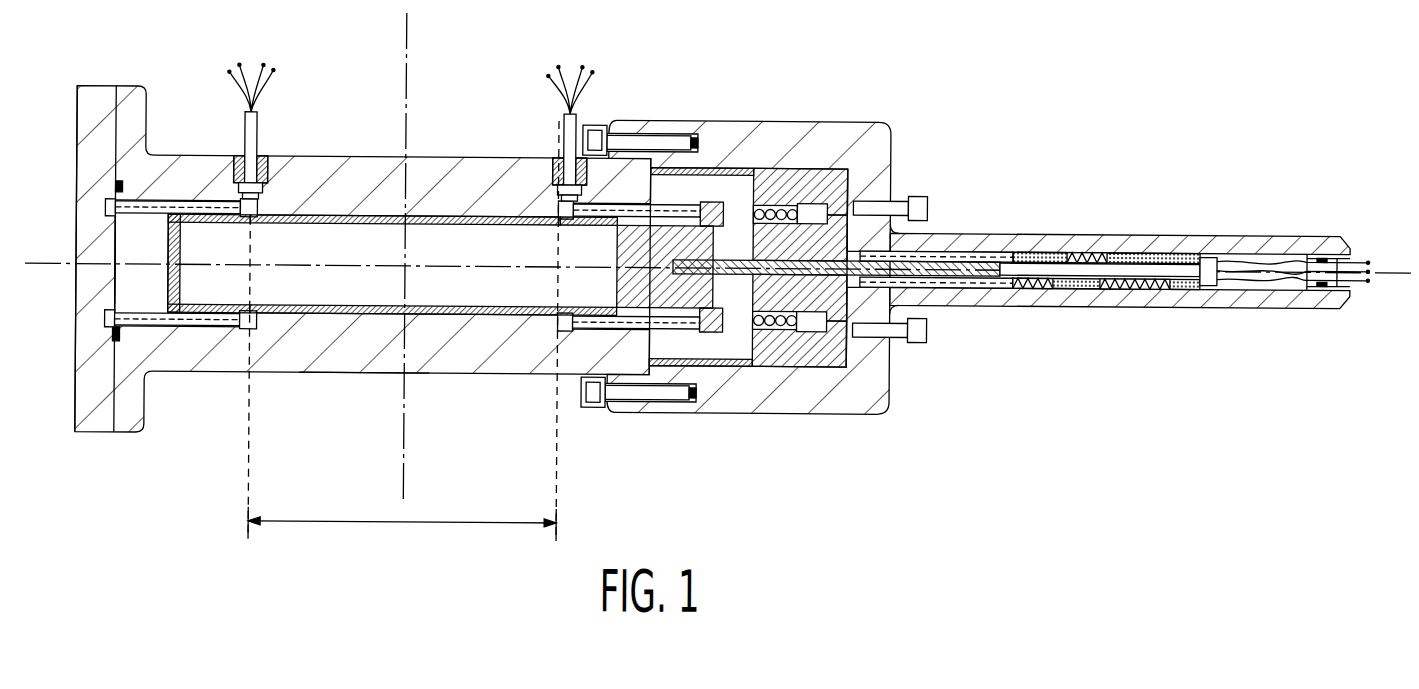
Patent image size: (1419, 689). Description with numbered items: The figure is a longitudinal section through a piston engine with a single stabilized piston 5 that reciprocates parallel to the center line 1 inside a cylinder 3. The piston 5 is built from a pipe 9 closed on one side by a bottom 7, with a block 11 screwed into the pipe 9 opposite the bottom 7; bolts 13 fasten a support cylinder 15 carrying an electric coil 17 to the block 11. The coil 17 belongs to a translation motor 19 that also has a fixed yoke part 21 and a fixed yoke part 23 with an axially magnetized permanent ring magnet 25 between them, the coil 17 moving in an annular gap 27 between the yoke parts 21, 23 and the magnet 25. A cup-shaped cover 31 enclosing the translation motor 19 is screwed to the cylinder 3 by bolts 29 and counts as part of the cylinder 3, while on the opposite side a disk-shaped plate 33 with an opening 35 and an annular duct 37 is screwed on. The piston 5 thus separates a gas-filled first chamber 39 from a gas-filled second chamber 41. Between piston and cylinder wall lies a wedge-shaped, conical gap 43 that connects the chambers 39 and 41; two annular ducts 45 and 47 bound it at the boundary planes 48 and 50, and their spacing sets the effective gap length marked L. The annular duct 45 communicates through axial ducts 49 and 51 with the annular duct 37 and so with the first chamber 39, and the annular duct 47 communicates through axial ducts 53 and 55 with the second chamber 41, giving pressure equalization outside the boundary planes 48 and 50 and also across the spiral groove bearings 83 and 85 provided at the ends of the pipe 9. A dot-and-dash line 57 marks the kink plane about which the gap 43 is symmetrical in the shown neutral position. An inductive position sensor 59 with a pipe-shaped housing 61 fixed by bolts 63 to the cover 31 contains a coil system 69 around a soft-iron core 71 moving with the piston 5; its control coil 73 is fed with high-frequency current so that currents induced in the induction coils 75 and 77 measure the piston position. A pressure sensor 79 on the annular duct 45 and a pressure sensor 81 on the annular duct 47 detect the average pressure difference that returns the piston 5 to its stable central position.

The center line 1 is at (1393, 265).
The cylinder 3 is at (713, 258).
The piston 5 is at (339, 260).
The bottom 7 is at (174, 288).
The pipe 9 is at (310, 208).
The block 11 is at (663, 288).
The bolts 13 is at (740, 308).
The support cylinder 15 is at (748, 170).
The electric coil 17 is at (775, 319).
The translation motor 19 is at (883, 377).
The yoke part 21 is at (773, 182).
The yoke part 23 is at (877, 187).
The permanent ring magnet 25 is at (803, 189).
The annular gap 27 is at (810, 316).
The bolt heads 29 is at (590, 404).
The cover 31 is at (708, 143).
The disk-shaped plate 33 is at (92, 119).
The opening 35 is at (76, 261).
The annular duct 37 is at (110, 313).
The first chamber 39 is at (143, 225).
The second chamber 41 is at (717, 343).
The gap 43 is at (364, 394).
The annular duct 45 is at (240, 326).
The annular duct 47 is at (553, 326).
The boundary plane 48 is at (250, 478).
The axial duct 49 is at (192, 201).
The boundary plane 50 is at (560, 485).
The axial duct 51 is at (143, 319).
The axial duct 53 is at (606, 203).
The axial duct 55 is at (620, 386).
The dot-and-dash line 57 is at (400, 38).
The inductive position sensor 59 is at (1042, 222).
The pipe-shaped housing 61 is at (1215, 288).
The bolts 63 is at (920, 330).
The coil system 69 is at (1145, 242).
The soft-iron core 71 is at (1093, 265).
The control coil 73 is at (1087, 244).
The induction coil 75 is at (1043, 283).
The induction coil 77 is at (1163, 282).
The pressure sensor 79 is at (268, 154).
The pressure sensor 81 is at (553, 154).
The spiral groove bearing 83 is at (198, 220).
The spiral groove bearing 85 is at (610, 219).